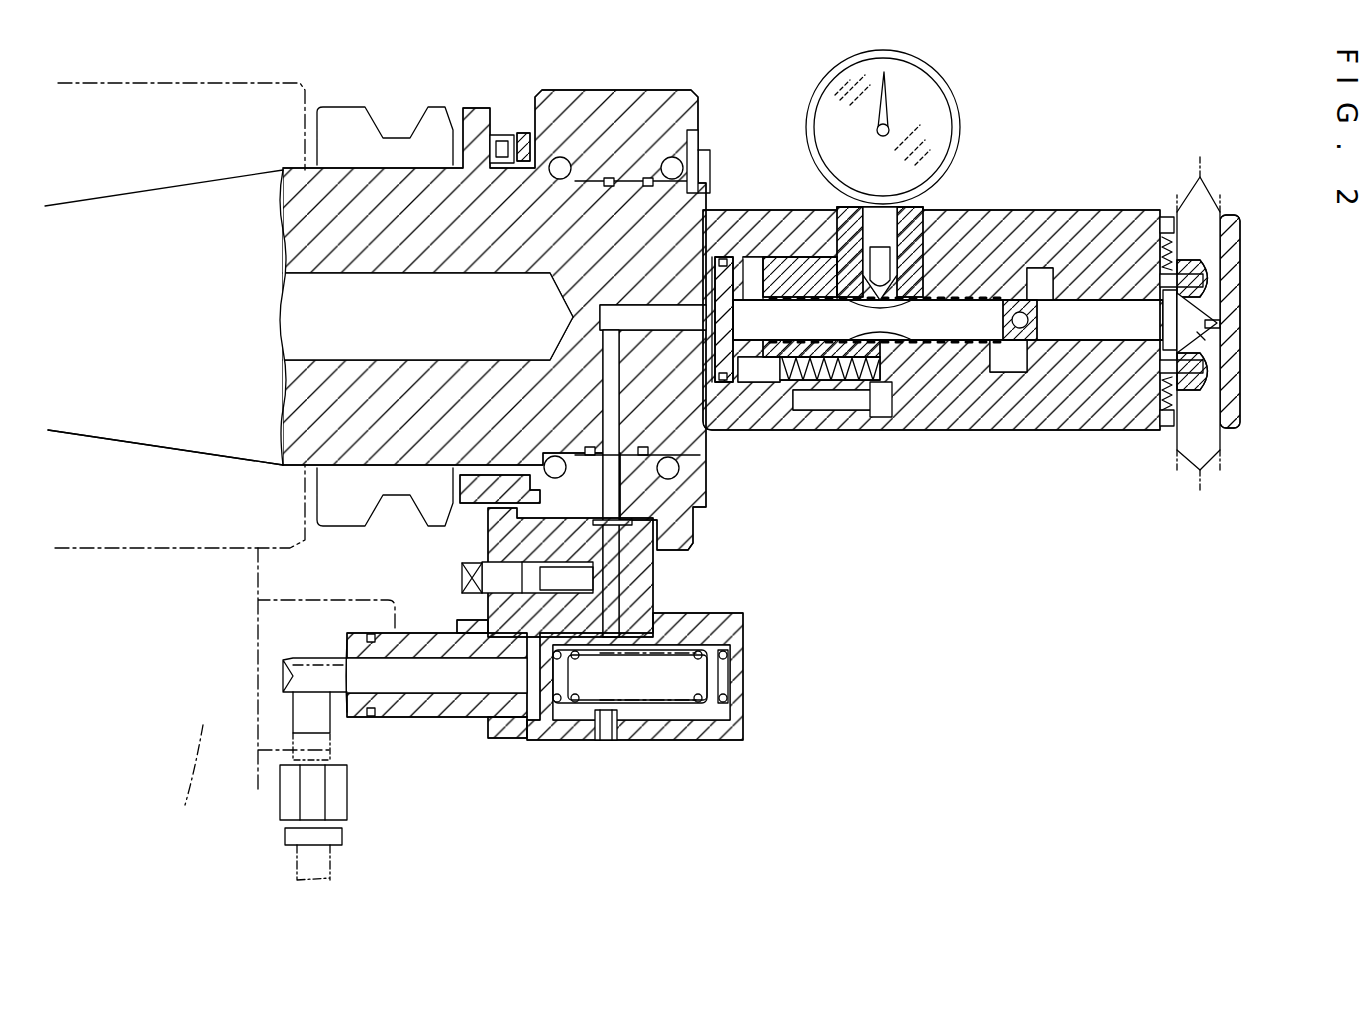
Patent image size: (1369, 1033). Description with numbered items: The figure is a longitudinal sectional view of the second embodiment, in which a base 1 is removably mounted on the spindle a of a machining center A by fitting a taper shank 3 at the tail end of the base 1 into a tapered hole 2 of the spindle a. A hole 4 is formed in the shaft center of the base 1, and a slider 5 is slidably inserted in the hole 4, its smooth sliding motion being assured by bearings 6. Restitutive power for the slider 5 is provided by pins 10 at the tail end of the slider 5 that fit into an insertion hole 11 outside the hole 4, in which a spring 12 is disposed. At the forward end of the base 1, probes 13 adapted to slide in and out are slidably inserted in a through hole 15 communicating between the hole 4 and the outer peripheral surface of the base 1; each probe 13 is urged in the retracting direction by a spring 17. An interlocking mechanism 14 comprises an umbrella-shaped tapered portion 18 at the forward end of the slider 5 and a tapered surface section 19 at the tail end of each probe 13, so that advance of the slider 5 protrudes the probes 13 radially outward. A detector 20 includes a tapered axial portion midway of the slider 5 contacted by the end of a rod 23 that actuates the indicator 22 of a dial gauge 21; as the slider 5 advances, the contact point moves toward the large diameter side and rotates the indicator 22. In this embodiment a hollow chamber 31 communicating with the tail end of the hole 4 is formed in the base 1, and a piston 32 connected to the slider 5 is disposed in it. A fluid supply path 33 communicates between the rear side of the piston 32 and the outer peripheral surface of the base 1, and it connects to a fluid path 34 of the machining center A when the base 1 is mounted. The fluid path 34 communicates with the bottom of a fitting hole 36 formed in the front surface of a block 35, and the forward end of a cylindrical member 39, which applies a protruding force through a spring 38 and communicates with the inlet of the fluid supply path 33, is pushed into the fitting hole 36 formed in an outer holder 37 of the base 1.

The base 1 is at (1078, 444).
The tapered hole 2 is at (163, 193).
The taper shank 3 is at (160, 412).
The spindle a is at (278, 105).
The hole 4 is at (1010, 286).
The slider 5 is at (1043, 325).
The bearings 6 is at (1080, 293).
The pins 10 is at (750, 385).
The insertion hole 11 is at (845, 372).
The spring 12 is at (810, 410).
The probes 13 is at (1200, 202).
The interlocking mechanism 14 is at (1212, 330).
The through hole 15 is at (1213, 233).
The spring 17 is at (1157, 407).
The tapered portion 18 is at (1187, 313).
The tapered surface section 19 is at (1197, 337).
The detector 20 is at (878, 337).
The pressure gauge 21 is at (815, 95).
The indicator 22 is at (885, 102).
The rod 23 is at (900, 272).
The hollow chamber 31 is at (750, 257).
The piston 32 is at (720, 257).
The fluid supply path 33 is at (570, 555).
The fluid path 34 is at (302, 672).
The block 35 is at (330, 613).
The fitting hole 36 is at (353, 717).
The outer holder 37 is at (745, 630).
The spring 38 is at (703, 677).
The cylindrical member 39 is at (433, 707).
The machining center A is at (188, 785).